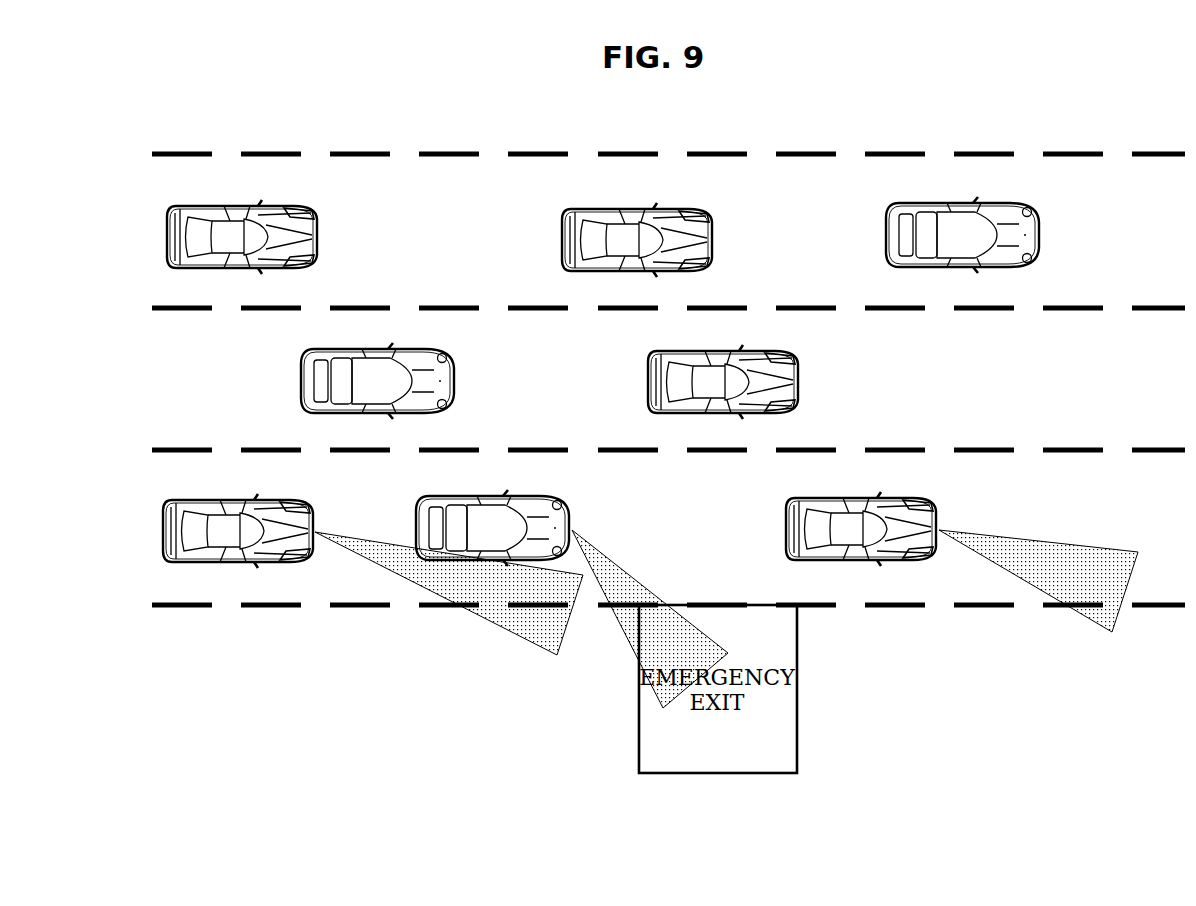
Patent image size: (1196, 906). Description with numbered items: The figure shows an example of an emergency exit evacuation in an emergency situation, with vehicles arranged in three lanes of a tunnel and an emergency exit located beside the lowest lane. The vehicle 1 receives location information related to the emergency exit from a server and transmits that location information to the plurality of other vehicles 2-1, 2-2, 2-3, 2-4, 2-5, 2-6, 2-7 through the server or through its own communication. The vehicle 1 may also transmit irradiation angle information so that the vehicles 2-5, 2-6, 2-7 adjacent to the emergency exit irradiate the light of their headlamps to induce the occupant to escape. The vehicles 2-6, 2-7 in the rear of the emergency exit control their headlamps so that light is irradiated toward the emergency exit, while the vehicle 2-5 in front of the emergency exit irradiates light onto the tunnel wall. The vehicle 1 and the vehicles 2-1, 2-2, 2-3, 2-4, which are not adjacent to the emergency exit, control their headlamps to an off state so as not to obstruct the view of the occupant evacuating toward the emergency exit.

The vehicle 1 is at (330, 237).
The other vehicle 2-1 is at (727, 242).
The other vehicle 2-2 is at (1057, 235).
The other vehicle 2-3 is at (468, 380).
The other vehicle 2-4 is at (818, 385).
The other vehicle 2-5 is at (318, 507).
The other vehicle 2-6 is at (577, 515).
The other vehicle 2-7 is at (947, 505).